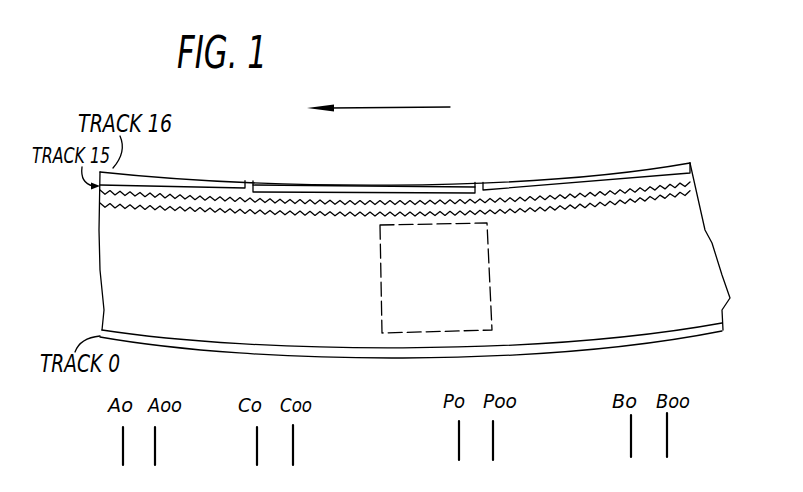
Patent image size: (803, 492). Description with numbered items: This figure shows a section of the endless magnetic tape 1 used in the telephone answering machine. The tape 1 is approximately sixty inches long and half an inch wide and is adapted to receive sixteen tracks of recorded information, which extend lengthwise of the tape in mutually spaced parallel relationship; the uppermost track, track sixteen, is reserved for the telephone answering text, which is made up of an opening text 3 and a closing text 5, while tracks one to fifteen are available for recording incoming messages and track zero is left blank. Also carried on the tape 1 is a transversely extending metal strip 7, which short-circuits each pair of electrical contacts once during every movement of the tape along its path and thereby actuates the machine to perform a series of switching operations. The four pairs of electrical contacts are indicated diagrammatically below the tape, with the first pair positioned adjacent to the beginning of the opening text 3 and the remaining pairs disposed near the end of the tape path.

The endless magnetic tape 1 is at (85, 297).
The opening text 3 is at (195, 178).
The closing text 5 is at (368, 186).
The metal strip 7 is at (488, 275).